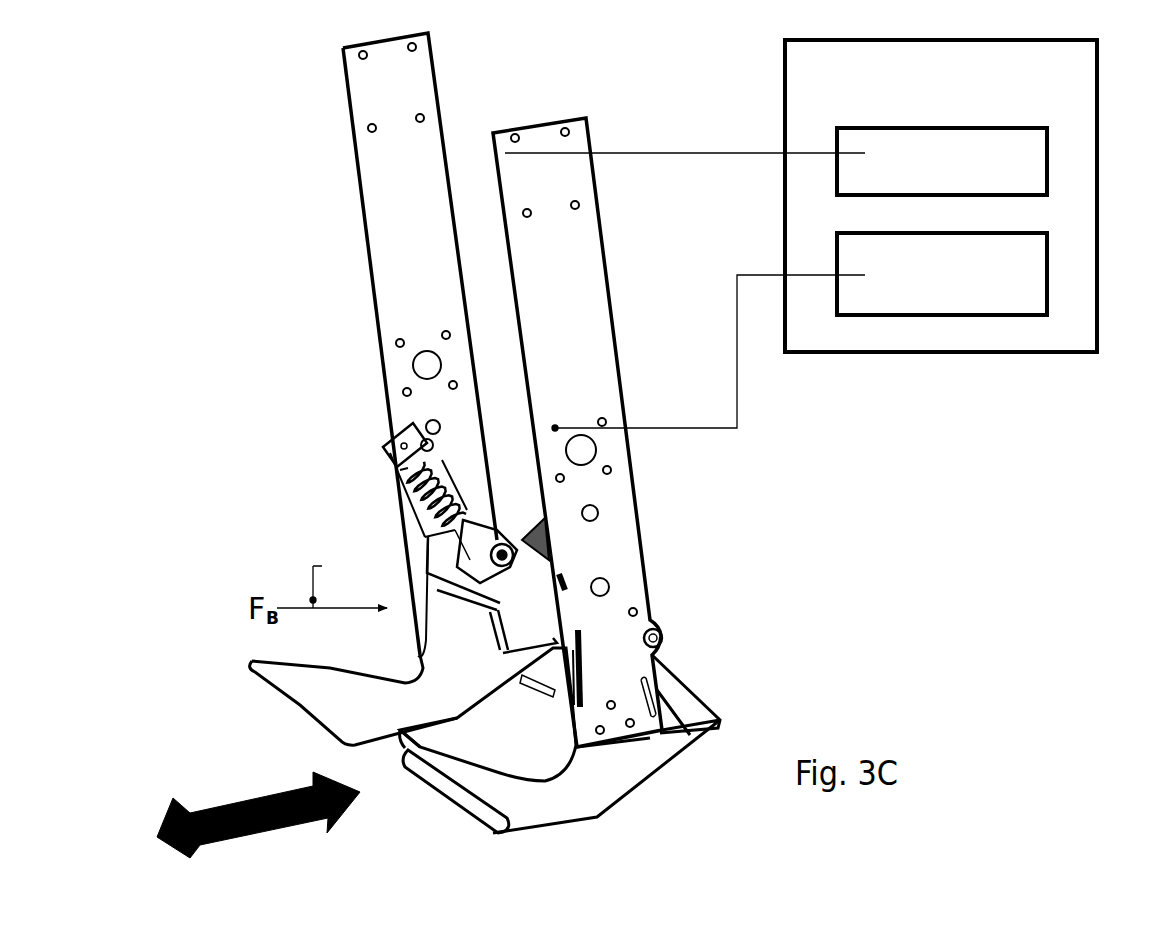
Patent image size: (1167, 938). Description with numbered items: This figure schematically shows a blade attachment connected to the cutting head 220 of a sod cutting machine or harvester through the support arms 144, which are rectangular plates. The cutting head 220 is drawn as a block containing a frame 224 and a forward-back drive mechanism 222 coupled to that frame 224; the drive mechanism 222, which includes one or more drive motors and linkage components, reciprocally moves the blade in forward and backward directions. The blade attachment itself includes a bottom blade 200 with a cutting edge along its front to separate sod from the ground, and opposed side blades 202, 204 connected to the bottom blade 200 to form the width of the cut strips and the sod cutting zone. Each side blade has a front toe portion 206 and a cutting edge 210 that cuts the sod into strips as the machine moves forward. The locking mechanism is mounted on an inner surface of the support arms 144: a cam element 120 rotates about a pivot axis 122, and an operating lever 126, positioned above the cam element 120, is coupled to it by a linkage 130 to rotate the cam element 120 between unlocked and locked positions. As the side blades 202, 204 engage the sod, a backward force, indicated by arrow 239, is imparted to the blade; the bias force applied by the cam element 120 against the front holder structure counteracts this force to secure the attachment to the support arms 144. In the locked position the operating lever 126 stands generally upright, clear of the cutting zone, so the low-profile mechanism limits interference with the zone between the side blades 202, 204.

The support arms 144 is at (403, 73).
The operating lever 126 is at (398, 468).
The linkage 130 is at (400, 497).
The cam element 120 is at (487, 558).
The arrow (backward force) 239 is at (330, 583).
The side blade 202 is at (460, 660).
The cutting edge 210 is at (318, 729).
The side blade 204 is at (617, 777).
The bottom blade 200 is at (720, 718).
The front toe portion 206 is at (510, 795).
The pivot axis 122 is at (668, 638).
The cutting head 220 is at (770, 86).
The frame 224 is at (1025, 163).
The forward-back drive mechanism 222 is at (1028, 275).